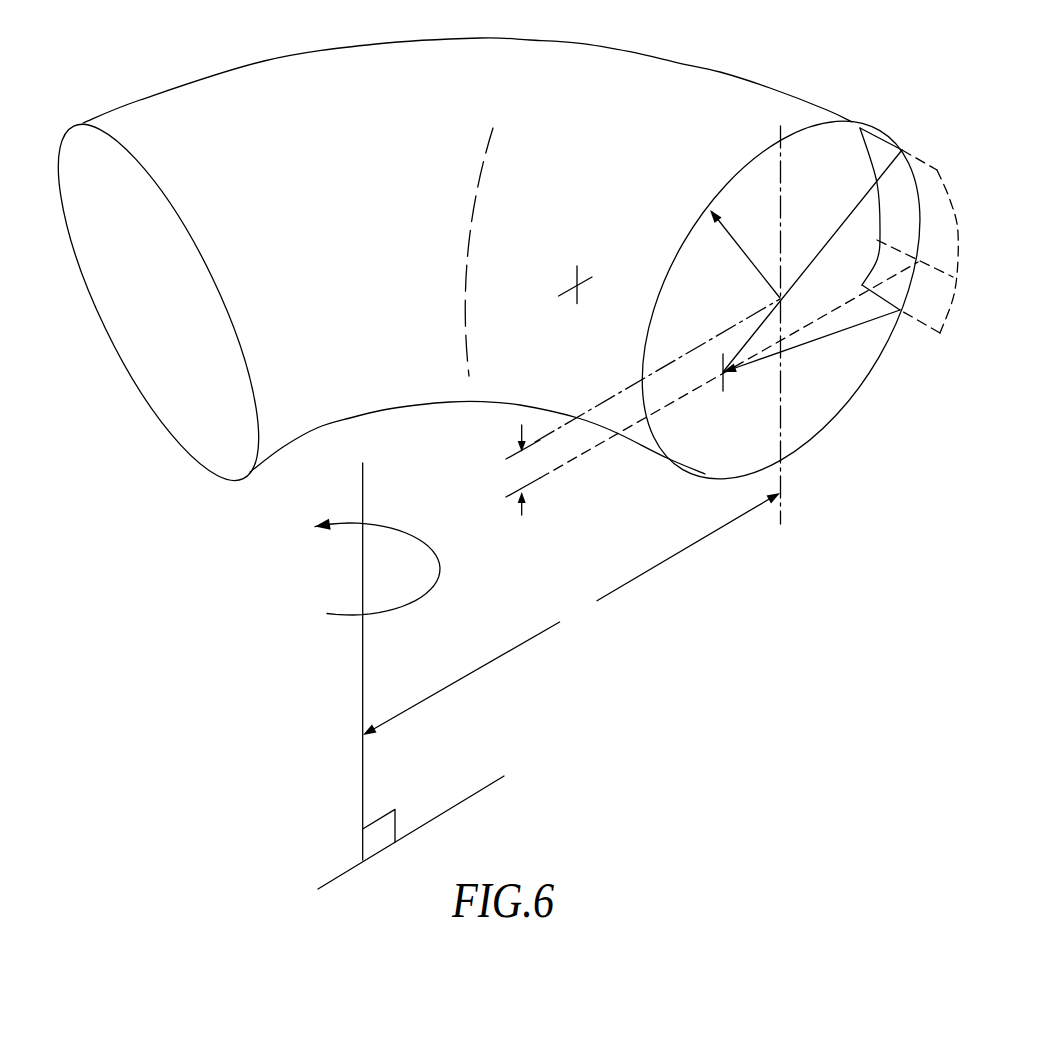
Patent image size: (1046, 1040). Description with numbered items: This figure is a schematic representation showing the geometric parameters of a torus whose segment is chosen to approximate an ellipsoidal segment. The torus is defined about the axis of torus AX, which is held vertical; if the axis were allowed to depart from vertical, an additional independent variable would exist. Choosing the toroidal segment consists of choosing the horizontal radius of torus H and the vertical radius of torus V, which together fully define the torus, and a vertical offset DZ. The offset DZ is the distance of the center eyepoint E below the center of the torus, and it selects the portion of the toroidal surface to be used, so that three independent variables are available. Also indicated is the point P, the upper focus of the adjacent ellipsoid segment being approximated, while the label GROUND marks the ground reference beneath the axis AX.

The vertical radius of torus V is at (707, 208).
The upper focus of adjacent ellipsoid segment P is at (577, 304).
The center eyepoint E is at (723, 391).
The distance of E below center of torus DZ is at (520, 470).
The axis of torus AX is at (377, 646).
The horizontal radius of torus H is at (571, 614).
The ground reference line GROUND is at (411, 823).